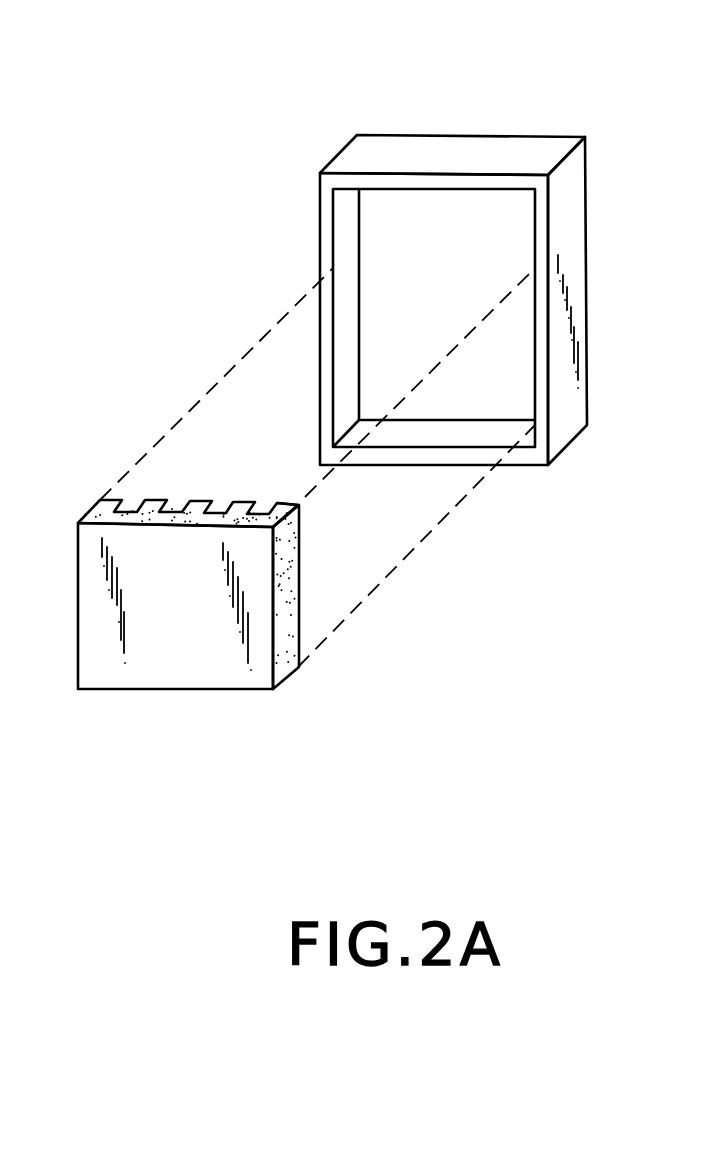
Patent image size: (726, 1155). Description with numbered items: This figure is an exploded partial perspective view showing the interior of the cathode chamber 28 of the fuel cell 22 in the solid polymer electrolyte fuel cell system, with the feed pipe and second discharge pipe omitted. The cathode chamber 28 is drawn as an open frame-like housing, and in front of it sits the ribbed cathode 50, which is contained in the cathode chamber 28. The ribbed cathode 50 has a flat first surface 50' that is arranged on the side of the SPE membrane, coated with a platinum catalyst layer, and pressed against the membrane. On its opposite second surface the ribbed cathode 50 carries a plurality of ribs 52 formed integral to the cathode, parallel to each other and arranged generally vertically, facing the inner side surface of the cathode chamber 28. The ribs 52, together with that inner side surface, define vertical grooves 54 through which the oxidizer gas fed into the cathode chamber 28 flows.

The fuel cell 22 is at (347, 130).
The cathode chamber 28 is at (497, 150).
The ribbed cathode 50 is at (227, 590).
The first surface 50' is at (175, 636).
The ribs 52 is at (200, 500).
The vertical grooves 54 is at (260, 513).